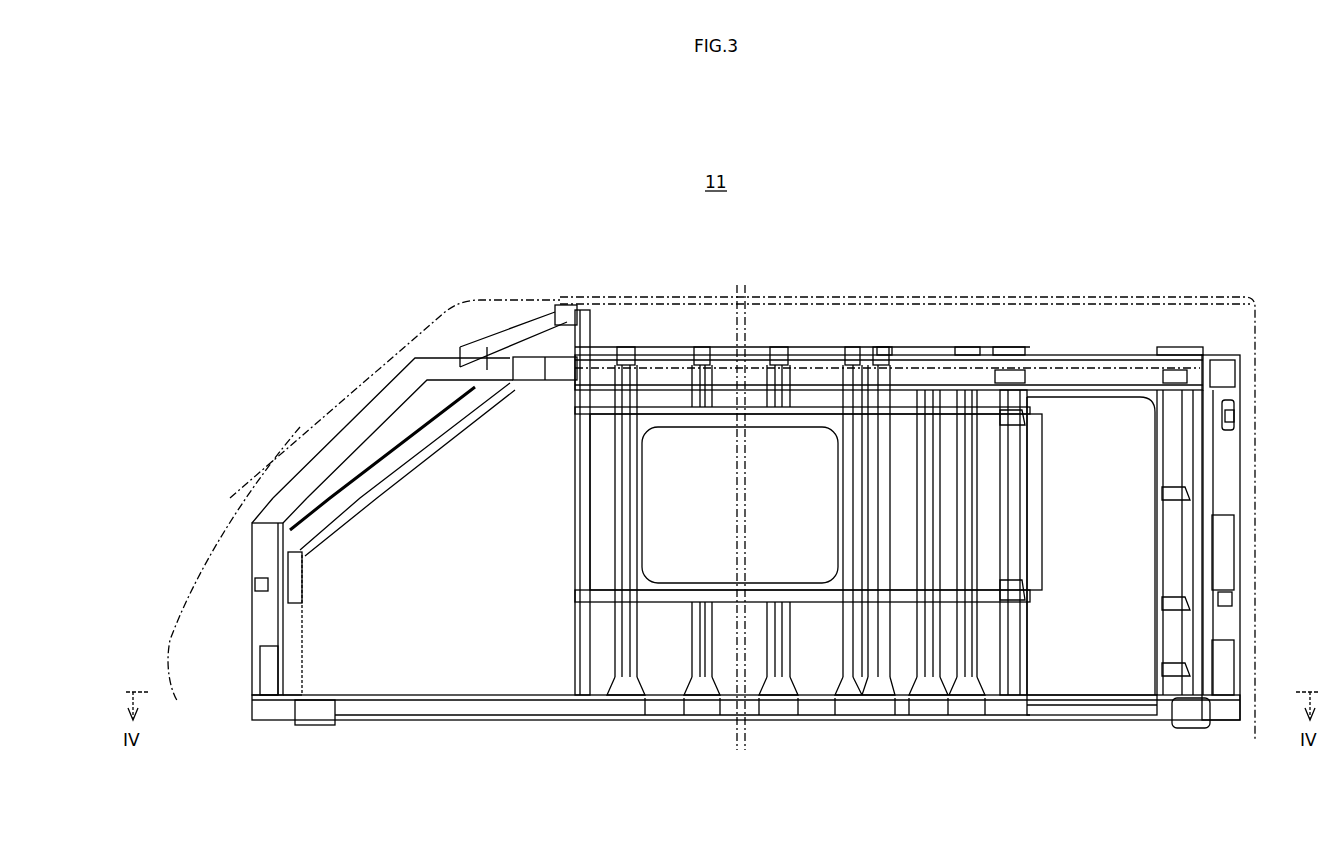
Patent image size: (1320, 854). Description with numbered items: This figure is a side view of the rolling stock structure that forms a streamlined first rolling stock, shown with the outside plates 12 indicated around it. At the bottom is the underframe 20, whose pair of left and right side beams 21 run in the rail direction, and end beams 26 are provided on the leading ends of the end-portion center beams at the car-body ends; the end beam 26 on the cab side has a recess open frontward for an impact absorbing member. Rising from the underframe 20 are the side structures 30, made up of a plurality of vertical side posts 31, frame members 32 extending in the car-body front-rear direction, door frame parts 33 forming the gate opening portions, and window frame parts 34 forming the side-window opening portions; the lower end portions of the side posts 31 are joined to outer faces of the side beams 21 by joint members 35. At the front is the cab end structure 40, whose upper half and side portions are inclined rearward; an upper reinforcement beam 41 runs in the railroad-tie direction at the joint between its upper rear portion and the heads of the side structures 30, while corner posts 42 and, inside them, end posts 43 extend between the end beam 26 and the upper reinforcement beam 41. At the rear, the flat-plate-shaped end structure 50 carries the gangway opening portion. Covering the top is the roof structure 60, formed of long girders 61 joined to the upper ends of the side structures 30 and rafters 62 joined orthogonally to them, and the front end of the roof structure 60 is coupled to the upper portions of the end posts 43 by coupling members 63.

The outside plates 12 is at (418, 325).
The underframe 20 is at (782, 537).
The side beams 21 is at (662, 730).
The end beams 26 is at (292, 728).
The side structures 30 is at (830, 340).
The side posts 31 is at (640, 657).
The frame members 32 is at (1010, 420).
The door frame parts 33 is at (1088, 712).
The window frame parts 34 is at (772, 582).
The joint members 35 is at (618, 735).
The cab end structure 40 is at (333, 430).
The upper reinforcement beam 41 is at (560, 395).
The corner posts 42 is at (390, 487).
The end posts 43 is at (290, 495).
The end structure 50 is at (1245, 400).
The roof structure 60 is at (1050, 290).
The long girders 61 is at (985, 300).
The rafters 62 is at (950, 300).
The coupling members 63 is at (525, 325).